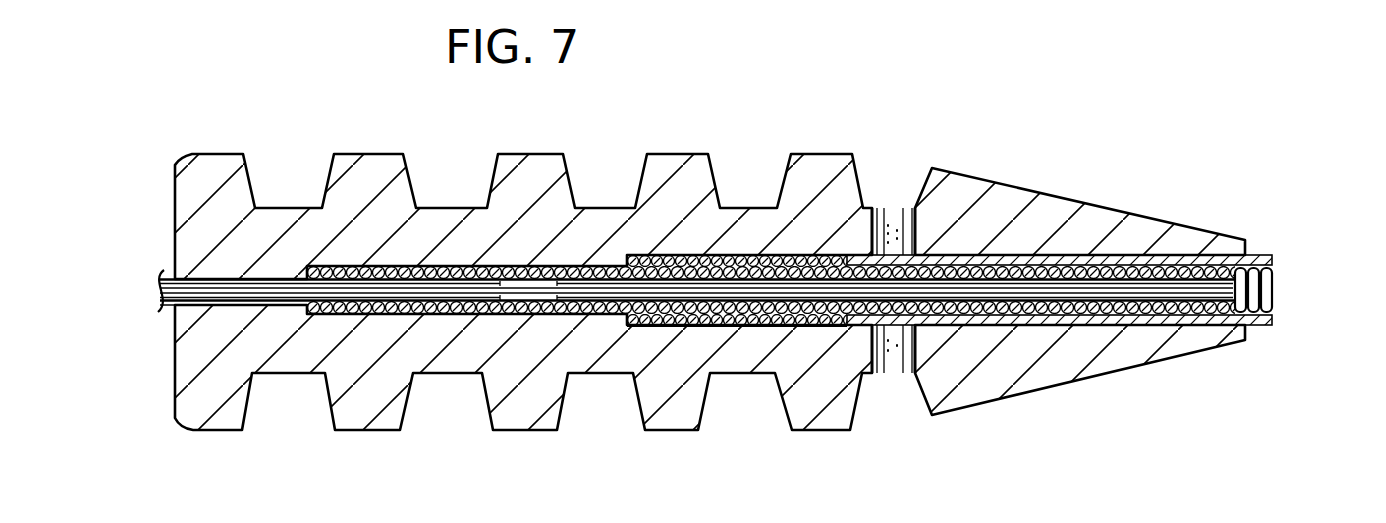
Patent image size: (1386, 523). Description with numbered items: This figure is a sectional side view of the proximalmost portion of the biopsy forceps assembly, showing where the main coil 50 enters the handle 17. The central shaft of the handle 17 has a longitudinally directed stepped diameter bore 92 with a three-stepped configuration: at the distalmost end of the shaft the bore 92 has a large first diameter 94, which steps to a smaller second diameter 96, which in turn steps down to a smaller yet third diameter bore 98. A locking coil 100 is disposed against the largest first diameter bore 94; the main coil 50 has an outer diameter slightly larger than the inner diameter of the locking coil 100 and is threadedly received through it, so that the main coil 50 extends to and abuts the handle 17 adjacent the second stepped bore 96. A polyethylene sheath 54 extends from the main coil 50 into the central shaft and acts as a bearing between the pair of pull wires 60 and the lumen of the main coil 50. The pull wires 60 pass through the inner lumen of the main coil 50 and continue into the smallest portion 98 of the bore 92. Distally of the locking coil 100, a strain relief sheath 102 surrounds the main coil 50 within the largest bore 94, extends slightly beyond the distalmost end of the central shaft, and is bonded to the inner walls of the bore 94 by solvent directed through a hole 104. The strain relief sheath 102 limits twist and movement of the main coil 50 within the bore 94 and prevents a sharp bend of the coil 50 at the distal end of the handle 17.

The handle 17 is at (692, 154).
The main coil 50 is at (1274, 285).
The polyethylene sheath 54 is at (1137, 303).
The pull wires 60 is at (1192, 283).
The stepped diameter bore 92 is at (1198, 323).
The first diameter bore 94 is at (1070, 258).
The second diameter bore 96 is at (582, 268).
The third diameter bore 98 is at (262, 281).
The locking coil 100 is at (437, 266).
The strain relief sheath 102 is at (905, 212).
The hole 104 is at (893, 210).